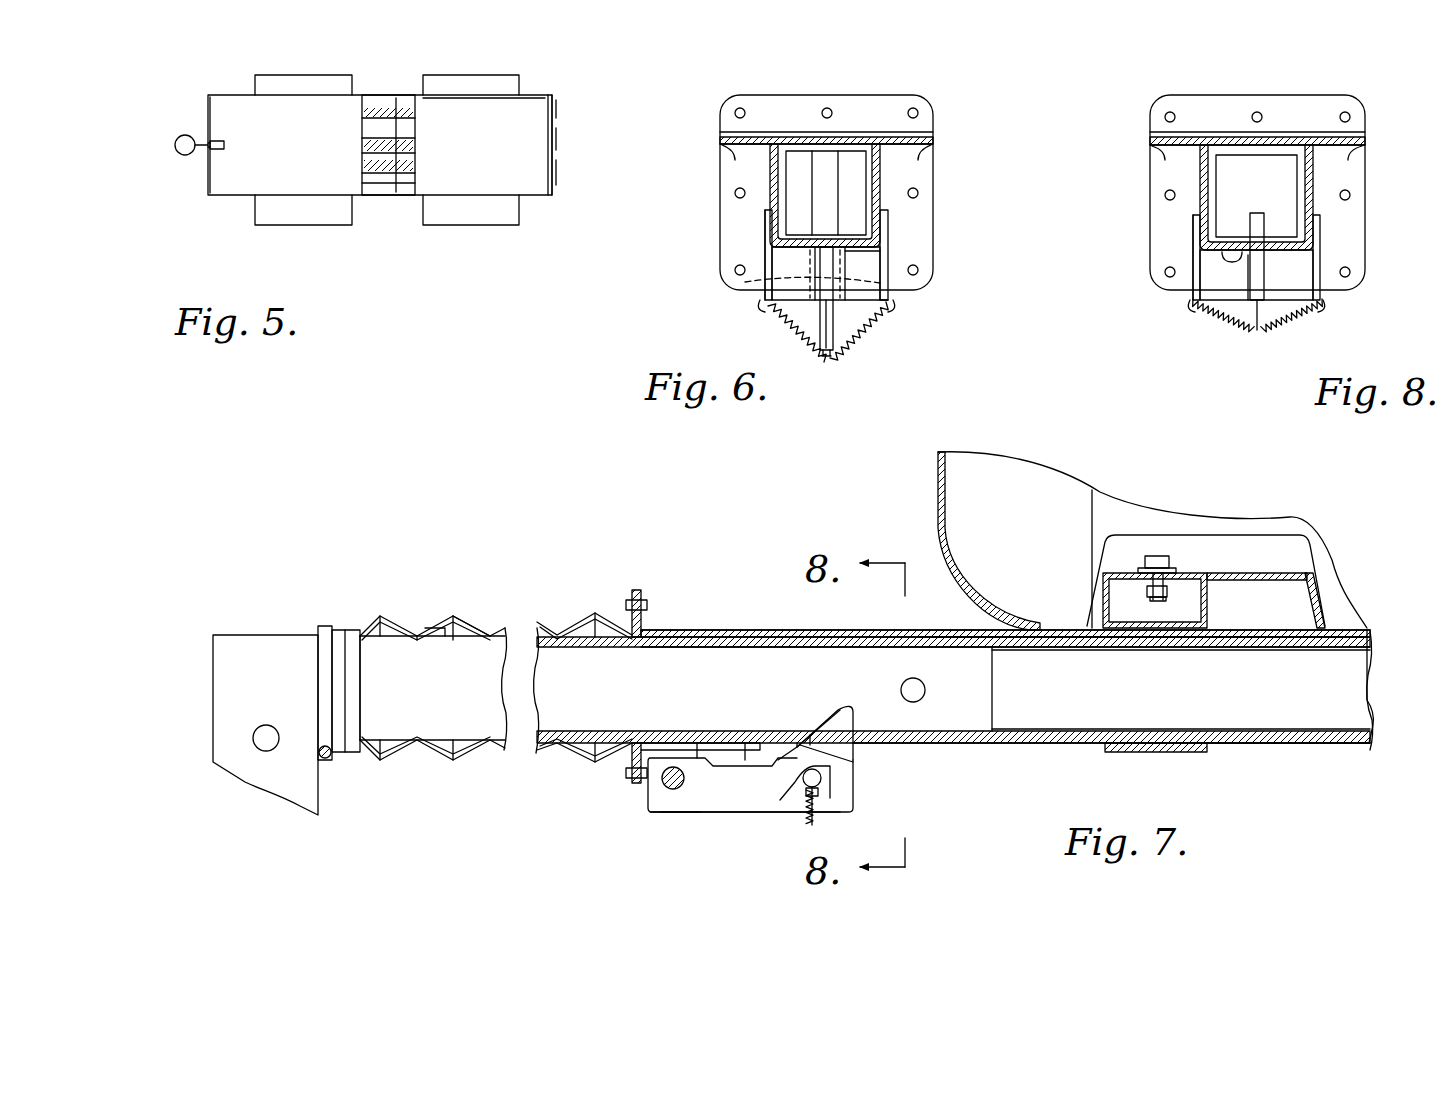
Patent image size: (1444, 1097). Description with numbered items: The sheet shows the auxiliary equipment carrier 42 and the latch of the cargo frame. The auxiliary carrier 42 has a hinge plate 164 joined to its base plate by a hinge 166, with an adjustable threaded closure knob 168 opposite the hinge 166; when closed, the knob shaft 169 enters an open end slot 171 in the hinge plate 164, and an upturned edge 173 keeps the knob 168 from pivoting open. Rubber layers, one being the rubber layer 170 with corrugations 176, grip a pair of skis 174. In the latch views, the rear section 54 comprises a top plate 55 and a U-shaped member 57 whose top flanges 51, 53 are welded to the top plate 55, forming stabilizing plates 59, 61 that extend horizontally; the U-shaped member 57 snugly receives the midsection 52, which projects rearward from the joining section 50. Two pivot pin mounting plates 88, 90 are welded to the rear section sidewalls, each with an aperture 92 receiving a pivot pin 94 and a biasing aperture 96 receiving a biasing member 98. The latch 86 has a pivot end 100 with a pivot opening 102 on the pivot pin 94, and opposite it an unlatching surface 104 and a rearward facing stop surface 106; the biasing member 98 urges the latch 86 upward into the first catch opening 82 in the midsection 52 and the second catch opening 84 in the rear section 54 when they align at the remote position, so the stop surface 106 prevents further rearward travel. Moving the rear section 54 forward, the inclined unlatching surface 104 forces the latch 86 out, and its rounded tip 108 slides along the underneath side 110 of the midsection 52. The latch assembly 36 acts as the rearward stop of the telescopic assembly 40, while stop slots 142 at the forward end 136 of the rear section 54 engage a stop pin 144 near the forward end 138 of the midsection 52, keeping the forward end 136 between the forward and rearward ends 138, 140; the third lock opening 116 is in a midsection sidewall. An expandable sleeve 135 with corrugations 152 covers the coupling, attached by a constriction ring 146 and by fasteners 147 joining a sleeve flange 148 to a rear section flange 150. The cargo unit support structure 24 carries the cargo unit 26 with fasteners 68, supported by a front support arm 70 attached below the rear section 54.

In FIG. 5, the auxiliary equipment carrier 42 is at (232, 62).
In FIG. 5, the rubber layer 170 is at (383, 105).
In FIG. 5, the corrugations 176 is at (400, 110).
In FIG. 5, the hinge plate 164 is at (528, 105).
In FIG. 5, the hinge 166 is at (560, 128).
In FIG. 5, the upturned edge 173 is at (208, 100).
In FIG. 5, the closure knob 168 is at (182, 135).
In FIG. 5, the knob shaft 169 is at (204, 152).
In FIG. 5, the open end slot 171 is at (228, 145).
In FIG. 5, the skis 174 is at (445, 228).
In FIG. 6, the rear section flange 150 is at (920, 178).
In FIG. 8, the rear section flange 150 is at (1208, 100).
In FIG. 7, the rear section flange 150 is at (645, 630).
In FIG. 6, the constriction ring 146 is at (912, 113).
In FIG. 8, the constriction ring 146 is at (1168, 112).
In FIG. 7, the constriction ring 146 is at (328, 678).
In FIG. 6, the stabilizing plate 61 is at (945, 135).
In FIG. 6, the top plate 55 is at (848, 135).
In FIG. 8, the top plate 55 is at (1300, 135).
In FIG. 7, the top plate 55 is at (950, 630).
In FIG. 6, the stabilizing plate 59 is at (715, 140).
In FIG. 6, the top flange 51 is at (730, 150).
In FIG. 8, the top flange 51 is at (1160, 150).
In FIG. 6, the top flange 53 is at (930, 160).
In FIG. 8, the top flange 53 is at (1350, 152).
In FIG. 6, the midsection 52 is at (808, 145).
In FIG. 8, the midsection 52 is at (1268, 145).
In FIG. 7, the midsection 52 is at (795, 655).
In FIG. 6, the stop pin 144 is at (835, 212).
In FIG. 7, the stop pin 144 is at (428, 618).
In FIG. 6, the U-shaped member 57 is at (770, 200).
In FIG. 8, the U-shaped member 57 is at (1205, 248).
In FIG. 7, the U-shaped member 57 is at (1310, 750).
In FIG. 6, the pivot pin mounting plate 88 is at (772, 238).
In FIG. 8, the pivot pin mounting plate 88 is at (1215, 272).
In FIG. 6, the pivot pin mounting plate 90 is at (885, 262).
In FIG. 8, the pivot pin mounting plate 90 is at (1298, 278).
In FIG. 7, the pivot pin mounting plate 90 is at (725, 748).
In FIG. 6, the rear section 54 is at (770, 250).
In FIG. 8, the rear section 54 is at (1310, 258).
In FIG. 7, the rear section 54 is at (1098, 745).
In FIG. 6, the aperture 92 is at (790, 280).
In FIG. 6, the second catch opening 84 is at (845, 250).
In FIG. 7, the second catch opening 84 is at (800, 748).
In FIG. 6, the pivot pin 94 is at (880, 290).
In FIG. 8, the pivot pin 94 is at (1248, 285).
In FIG. 7, the pivot pin 94 is at (665, 782).
In FIG. 6, the biasing member 98 is at (860, 325).
In FIG. 8, the biasing member 98 is at (1300, 322).
In FIG. 7, the biasing member 98 is at (812, 825).
In FIG. 6, the stop surface 106 is at (828, 355).
In FIG. 7, the stop surface 106 is at (855, 745).
In FIG. 6, the latch assembly 36 is at (905, 372).
In FIG. 8, the latch assembly 36 is at (1215, 342).
In FIG. 7, the latch assembly 36 is at (700, 877).
In FIG. 8, the underneath side 110 is at (1245, 250).
In FIG. 7, the underneath side 110 is at (615, 748).
In FIG. 7, the cargo unit 26 is at (1005, 462).
In FIG. 7, the cargo unit support structure 24 is at (1225, 614).
In FIG. 7, the fasteners 68 is at (1165, 562).
In FIG. 7, the joining section 50 is at (225, 703).
In FIG. 7, the forward end of the midsection 138 is at (365, 645).
In FIG. 7, the expandable sleeve 135 is at (407, 620).
In FIG. 7, the corrugations 152 is at (470, 622).
In FIG. 7, the telescopic assembly 40 is at (440, 792).
In FIG. 7, the sleeve flange 148 is at (636, 592).
In FIG. 7, the fasteners 147 is at (626, 605).
In FIG. 7, the stop slots 142 is at (655, 635).
In FIG. 7, the forward end of the rear section 136 is at (700, 640).
In FIG. 7, the third lock opening 116 is at (925, 687).
In FIG. 7, the rearward end of the midsection 140 is at (995, 712).
In FIG. 7, the front support arm 70 is at (1185, 752).
In FIG. 7, the unlatching surface 104 is at (818, 710).
In FIG. 7, the rounded tip 108 is at (825, 708).
In FIG. 7, the first catch opening 82 is at (800, 740).
In FIG. 7, the biasing aperture 96 is at (820, 792).
In FIG. 7, the pivot end 100 is at (655, 805).
In FIG. 7, the pivot opening 102 is at (677, 792).
In FIG. 7, the latch 86 is at (760, 800).